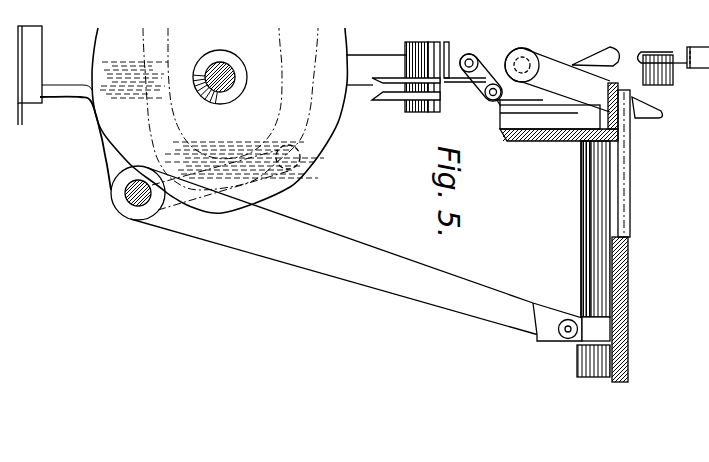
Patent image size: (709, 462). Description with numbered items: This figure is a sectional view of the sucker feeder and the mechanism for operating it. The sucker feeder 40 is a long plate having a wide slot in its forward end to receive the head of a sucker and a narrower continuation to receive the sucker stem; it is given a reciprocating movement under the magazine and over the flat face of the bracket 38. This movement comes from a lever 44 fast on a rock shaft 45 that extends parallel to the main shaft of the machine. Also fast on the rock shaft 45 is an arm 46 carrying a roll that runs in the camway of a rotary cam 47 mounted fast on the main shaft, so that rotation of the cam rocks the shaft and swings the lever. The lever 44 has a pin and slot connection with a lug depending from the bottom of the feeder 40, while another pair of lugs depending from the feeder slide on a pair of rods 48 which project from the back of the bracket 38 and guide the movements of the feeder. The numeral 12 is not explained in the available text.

The cam wheel 12 is at (206, 72).
The bracket 38 is at (630, 128).
The sucker feeder 40 is at (627, 246).
The lever 44 is at (368, 250).
The rock shaft 45 is at (126, 193).
The arm 46 is at (291, 170).
The rotary cam 47 is at (335, 117).
The rods 48 is at (592, 210).